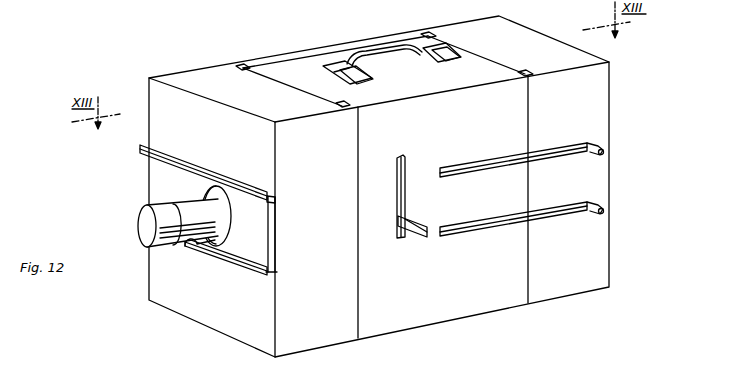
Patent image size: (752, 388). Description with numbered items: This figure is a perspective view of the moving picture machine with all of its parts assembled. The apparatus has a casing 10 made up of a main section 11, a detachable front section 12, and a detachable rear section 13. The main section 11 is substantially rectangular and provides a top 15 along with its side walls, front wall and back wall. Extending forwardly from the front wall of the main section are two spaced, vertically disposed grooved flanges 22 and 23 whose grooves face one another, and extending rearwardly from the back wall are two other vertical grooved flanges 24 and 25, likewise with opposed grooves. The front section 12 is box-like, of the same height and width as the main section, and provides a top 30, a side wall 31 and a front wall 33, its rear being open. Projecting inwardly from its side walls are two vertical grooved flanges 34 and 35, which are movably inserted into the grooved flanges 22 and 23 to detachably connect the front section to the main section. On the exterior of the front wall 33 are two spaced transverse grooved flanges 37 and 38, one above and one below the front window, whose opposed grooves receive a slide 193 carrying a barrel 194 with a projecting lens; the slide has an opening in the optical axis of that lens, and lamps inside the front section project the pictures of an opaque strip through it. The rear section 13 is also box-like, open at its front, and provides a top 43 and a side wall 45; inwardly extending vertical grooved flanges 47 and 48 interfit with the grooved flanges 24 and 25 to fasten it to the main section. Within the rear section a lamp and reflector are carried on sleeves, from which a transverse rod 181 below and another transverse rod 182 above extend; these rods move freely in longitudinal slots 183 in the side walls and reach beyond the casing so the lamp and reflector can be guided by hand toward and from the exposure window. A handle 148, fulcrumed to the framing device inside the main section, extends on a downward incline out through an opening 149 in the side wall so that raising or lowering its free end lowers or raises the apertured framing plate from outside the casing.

The casing 10 is at (609, 287).
The main section 11 is at (488, 312).
The front section 12 is at (306, 348).
The rear section 13 is at (578, 295).
The top 15 is at (462, 60).
The grooved flange 22 is at (241, 64).
The grooved flange 23 is at (350, 107).
The grooved flange 24 is at (418, 40).
The grooved flange 25 is at (522, 78).
The top 30 is at (286, 88).
The side wall 31 is at (320, 330).
The front wall 33 is at (218, 318).
The grooved flange 34 is at (350, 102).
The grooved flange 35 is at (250, 68).
The transverse grooved flange 37 is at (252, 272).
The transverse grooved flange 38 is at (237, 190).
The top 43 is at (542, 45).
The side wall 45 is at (596, 268).
The grooved flange 47 is at (537, 72).
The grooved flange 48 is at (436, 35).
The handle 148 is at (415, 233).
The opening 149 is at (400, 172).
The transverse rod 181 is at (605, 208).
The transverse rod 182 is at (605, 146).
The slots 183 is at (493, 165).
The slide 193 is at (263, 230).
The barrel 194 is at (190, 210).